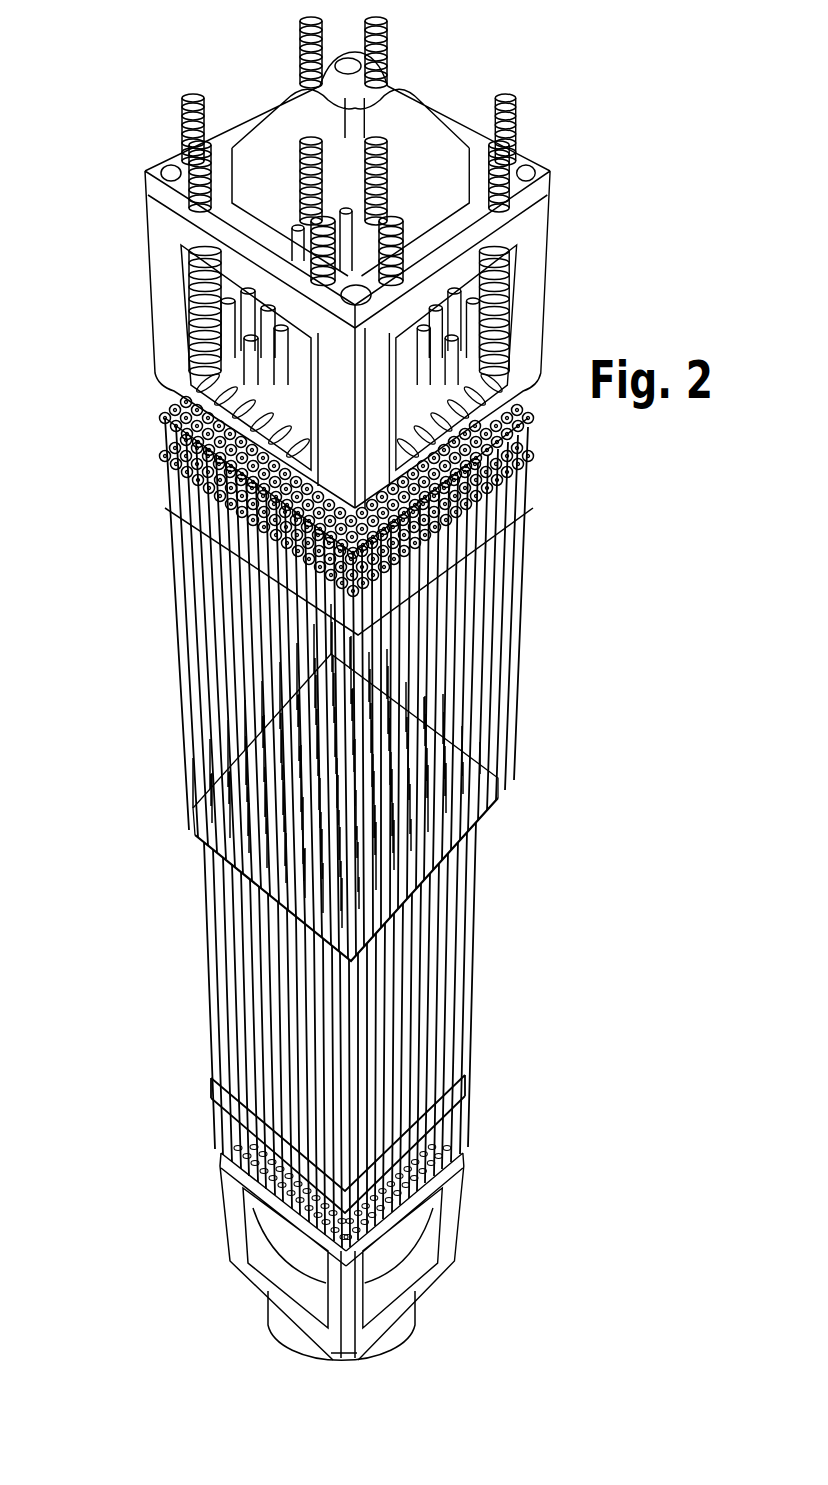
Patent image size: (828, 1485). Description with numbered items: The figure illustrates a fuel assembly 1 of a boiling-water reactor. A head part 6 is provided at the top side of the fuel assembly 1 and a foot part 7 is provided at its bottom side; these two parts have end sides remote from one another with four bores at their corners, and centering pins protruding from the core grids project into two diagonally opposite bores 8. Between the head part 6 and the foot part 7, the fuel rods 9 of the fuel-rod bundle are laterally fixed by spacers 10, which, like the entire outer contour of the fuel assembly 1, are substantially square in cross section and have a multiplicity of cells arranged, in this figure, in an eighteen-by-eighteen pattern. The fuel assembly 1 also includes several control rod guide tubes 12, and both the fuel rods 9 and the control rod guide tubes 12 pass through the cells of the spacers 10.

The fuel assembly 1 is at (130, 642).
The head part 6 is at (430, 70).
The foot part 7 is at (445, 1184).
The bores 8 is at (322, 60).
The fuel rods 9 is at (465, 978).
The spacers 10 is at (443, 847).
The control rod guide tubes 12 is at (420, 720).